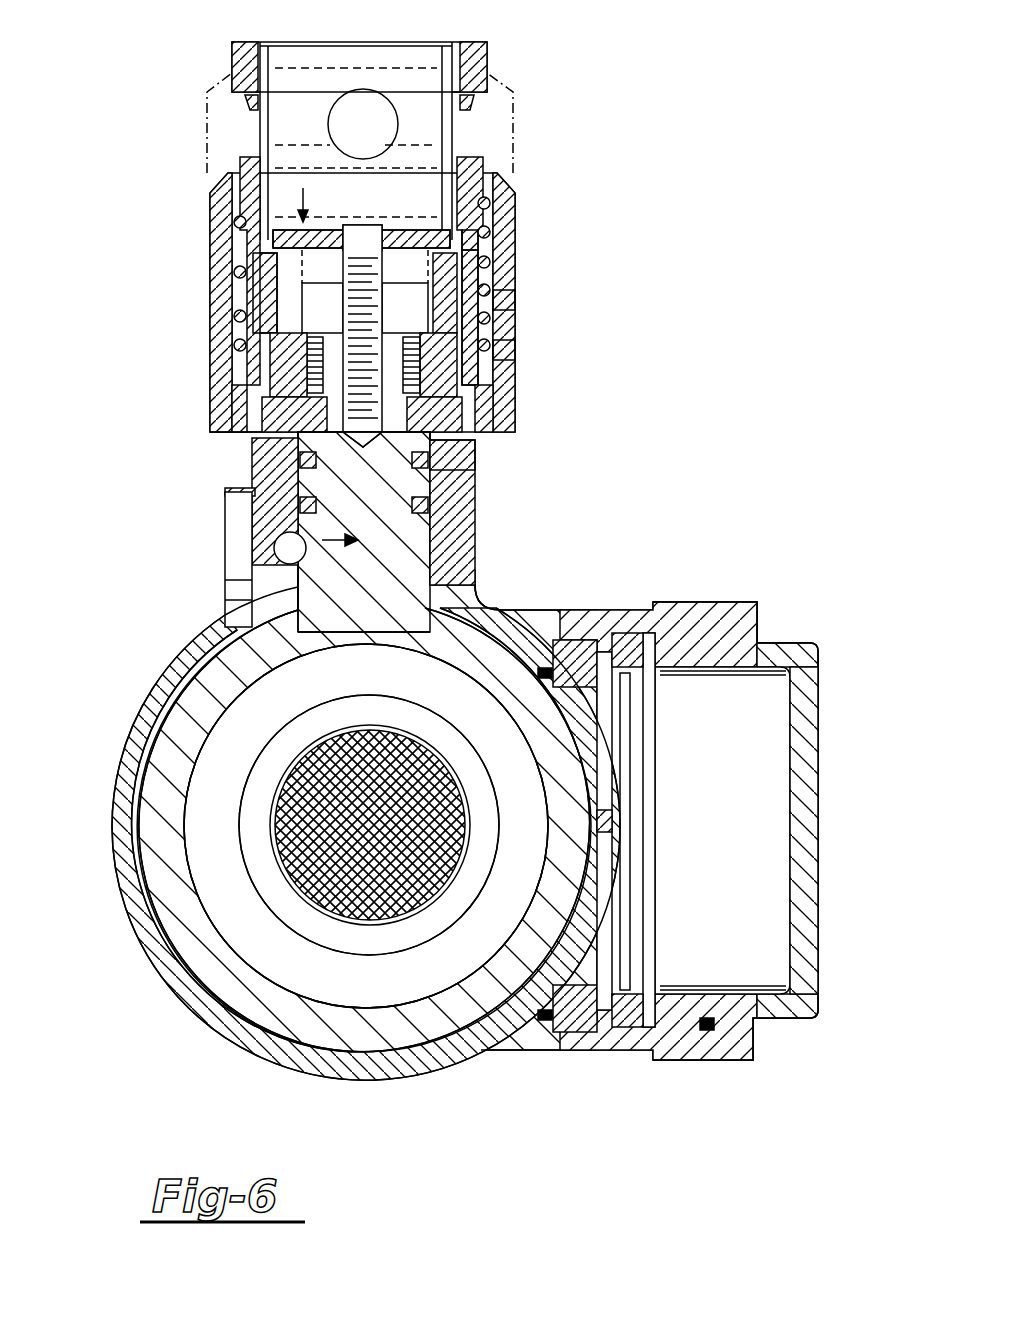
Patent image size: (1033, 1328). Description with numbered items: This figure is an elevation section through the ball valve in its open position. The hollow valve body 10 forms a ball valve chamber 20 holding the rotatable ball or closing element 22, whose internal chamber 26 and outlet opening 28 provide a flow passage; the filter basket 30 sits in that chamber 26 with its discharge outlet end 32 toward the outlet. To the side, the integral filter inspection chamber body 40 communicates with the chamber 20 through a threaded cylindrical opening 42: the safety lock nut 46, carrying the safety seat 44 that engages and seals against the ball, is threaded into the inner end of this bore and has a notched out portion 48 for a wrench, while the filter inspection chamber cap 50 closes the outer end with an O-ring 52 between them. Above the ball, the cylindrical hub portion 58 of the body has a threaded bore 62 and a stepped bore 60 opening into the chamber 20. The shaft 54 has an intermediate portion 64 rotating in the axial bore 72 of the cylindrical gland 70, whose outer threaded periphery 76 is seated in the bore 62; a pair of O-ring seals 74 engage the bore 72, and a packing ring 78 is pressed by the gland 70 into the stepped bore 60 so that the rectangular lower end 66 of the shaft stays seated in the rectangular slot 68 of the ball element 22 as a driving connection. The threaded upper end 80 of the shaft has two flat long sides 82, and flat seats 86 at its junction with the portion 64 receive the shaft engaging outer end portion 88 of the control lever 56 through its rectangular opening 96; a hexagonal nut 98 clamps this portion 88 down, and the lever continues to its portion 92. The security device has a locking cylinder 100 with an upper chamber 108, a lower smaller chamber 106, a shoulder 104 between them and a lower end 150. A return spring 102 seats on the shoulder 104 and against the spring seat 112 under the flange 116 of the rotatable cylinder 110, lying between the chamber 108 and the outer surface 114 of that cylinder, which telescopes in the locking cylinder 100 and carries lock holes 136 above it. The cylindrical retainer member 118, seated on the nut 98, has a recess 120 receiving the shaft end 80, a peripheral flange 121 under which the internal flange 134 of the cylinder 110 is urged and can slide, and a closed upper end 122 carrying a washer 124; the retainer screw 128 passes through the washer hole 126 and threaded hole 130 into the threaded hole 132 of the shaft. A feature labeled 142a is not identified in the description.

The hollow valve body 10 is at (190, 990).
The ball valve chamber 20 is at (345, 1040).
The rotatable ball or closing element 22 is at (185, 899).
The internal chamber of ball element 26 is at (205, 750).
The outlet opening 28 is at (280, 835).
The filter basket 30 is at (335, 905).
The discharge outlet end 32 is at (405, 890).
The filter inspection chamber body 40 is at (722, 602).
The threaded cylindrical opening 42 is at (612, 633).
The safety seat 44 is at (563, 640).
The safety lock nut 46 is at (633, 1027).
The notched out portion 48 is at (632, 835).
The filter inspection chamber cap 50 is at (800, 866).
The O-ring 52 is at (710, 1030).
The shaft 54 is at (278, 552).
The control lever 56 is at (327, 152).
The cylindrical hub portion 58 is at (463, 548).
The stepped bore 60 is at (252, 593).
The threaded bore 62 is at (472, 500).
The shaft intermediate portion 64 is at (464, 597).
The shaft lower end 66 is at (296, 605).
The rectangular slot 68 is at (376, 635).
The cylindrical gland 70 is at (468, 445).
The axial bore of gland 72 is at (228, 492).
The O-ring seals 74 is at (253, 458).
The outer threaded periphery 76 is at (430, 540).
The packing ring 78 is at (233, 580).
The threaded upper end of shaft 80 is at (490, 345).
The flat long sides 82 is at (505, 298).
The flat seats 86 is at (460, 450).
The shaft engaging outer end portion 88 is at (515, 390).
The control lever portion 92 is at (383, 166).
The rectangular opening 96 is at (275, 412).
The hexagonal nut 98 is at (273, 372).
The locking cylinder 100 is at (520, 185).
The return spring 102 is at (490, 322).
The shoulder or seat 104 is at (233, 332).
The lower smaller diameter chamber 106 is at (475, 413).
The upper chamber 108 is at (490, 287).
The lockable rotatable cylinder 110 is at (505, 48).
The shoulder or spring seat 112 is at (232, 205).
The lower cylindrical outer surface 114 is at (272, 278).
The annular outwardly protruding flange 116 is at (220, 183).
The cylindrical retainer member 118 is at (462, 253).
The cylindrical recess 120 is at (488, 263).
The peripheral flange 121 is at (273, 282).
The closed upper end 122 is at (478, 238).
The washer 124 is at (432, 195).
The axial hole 126 is at (372, 230).
The retainer screw 128 is at (363, 124).
The threaded hole 130 is at (306, 200).
The axial threaded hole 132 is at (273, 313).
The internal peripheral flange 134 is at (240, 332).
The circular lock holes 136 is at (337, 122).
The lever pivot 142a is at (215, 588).
The lower end of locking cylinder 150 is at (228, 437).